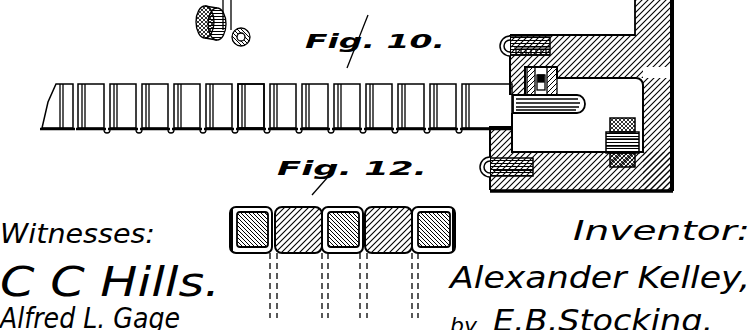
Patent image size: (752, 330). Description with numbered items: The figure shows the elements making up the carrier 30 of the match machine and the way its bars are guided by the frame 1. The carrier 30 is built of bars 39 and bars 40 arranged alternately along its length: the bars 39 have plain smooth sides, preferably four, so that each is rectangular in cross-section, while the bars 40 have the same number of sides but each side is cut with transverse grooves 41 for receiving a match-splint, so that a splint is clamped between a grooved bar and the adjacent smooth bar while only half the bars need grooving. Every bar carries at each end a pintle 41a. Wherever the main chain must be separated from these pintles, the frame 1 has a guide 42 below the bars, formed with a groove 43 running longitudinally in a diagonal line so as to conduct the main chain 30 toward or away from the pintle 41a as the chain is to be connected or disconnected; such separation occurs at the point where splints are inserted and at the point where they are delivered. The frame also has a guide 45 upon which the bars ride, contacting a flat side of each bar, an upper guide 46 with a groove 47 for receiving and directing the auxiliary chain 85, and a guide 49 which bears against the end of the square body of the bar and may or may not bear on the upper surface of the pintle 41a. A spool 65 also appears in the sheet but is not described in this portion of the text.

In FIG. 10, the frame 1 is at (673, 95).
In FIG. 10, the carrier 30 is at (637, 132).
In FIG. 12, the bar 39 is at (296, 253).
In FIG. 10, the bar 40 is at (276, 122).
In FIG. 12, the bar 40 is at (236, 231).
In FIG. 10, the transverse grooves 41 is at (290, 83).
In FIG. 12, the transverse grooves 41 is at (268, 211).
In FIG. 10, the pintle 41a is at (549, 119).
In FIG. 10, the guide 42 is at (536, 189).
In FIG. 10, the groove 43 is at (632, 167).
In FIG. 10, the guide 45 is at (493, 143).
In FIG. 10, the upper guide 46 is at (637, 55).
In FIG. 10, the groove 47 is at (578, 58).
In FIG. 10, the guide 49 is at (512, 72).
In FIG. 10, the spool 65 is at (197, 23).
In FIG. 10, the auxiliary chain 85 is at (540, 80).